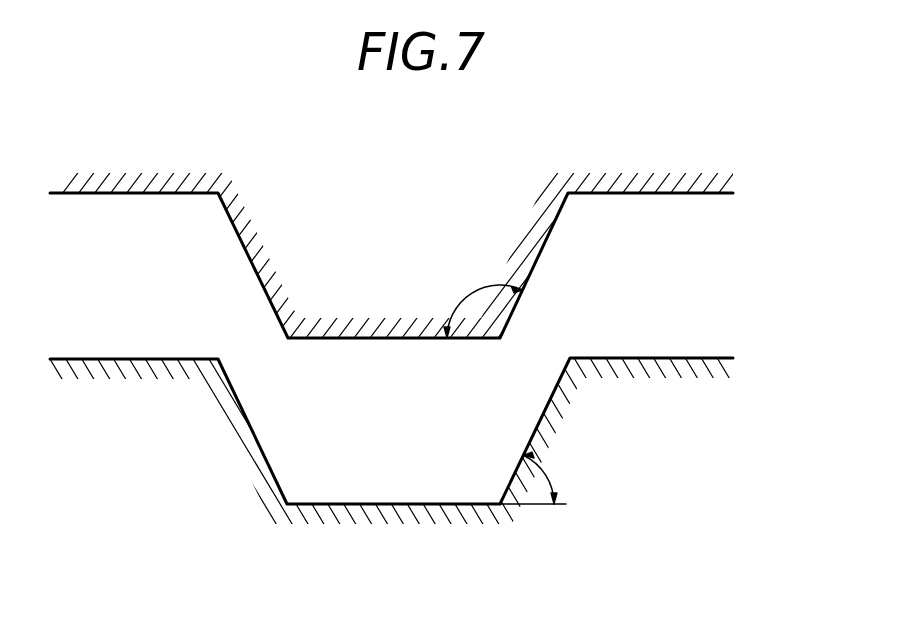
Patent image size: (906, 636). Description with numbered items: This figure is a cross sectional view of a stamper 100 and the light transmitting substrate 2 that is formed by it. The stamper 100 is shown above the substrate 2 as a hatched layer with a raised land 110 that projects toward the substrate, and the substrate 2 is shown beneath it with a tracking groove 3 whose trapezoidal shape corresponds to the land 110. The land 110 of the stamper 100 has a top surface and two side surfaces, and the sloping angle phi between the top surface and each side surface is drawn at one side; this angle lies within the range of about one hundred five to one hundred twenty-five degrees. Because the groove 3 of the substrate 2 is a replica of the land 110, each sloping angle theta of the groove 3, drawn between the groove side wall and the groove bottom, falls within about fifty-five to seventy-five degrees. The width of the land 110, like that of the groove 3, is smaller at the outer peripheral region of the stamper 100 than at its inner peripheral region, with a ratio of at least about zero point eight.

The stamper 100 is at (673, 143).
The land 110 is at (403, 242).
The light transmitting substrate 2 is at (654, 440).
The tracking groove 3 is at (388, 467).